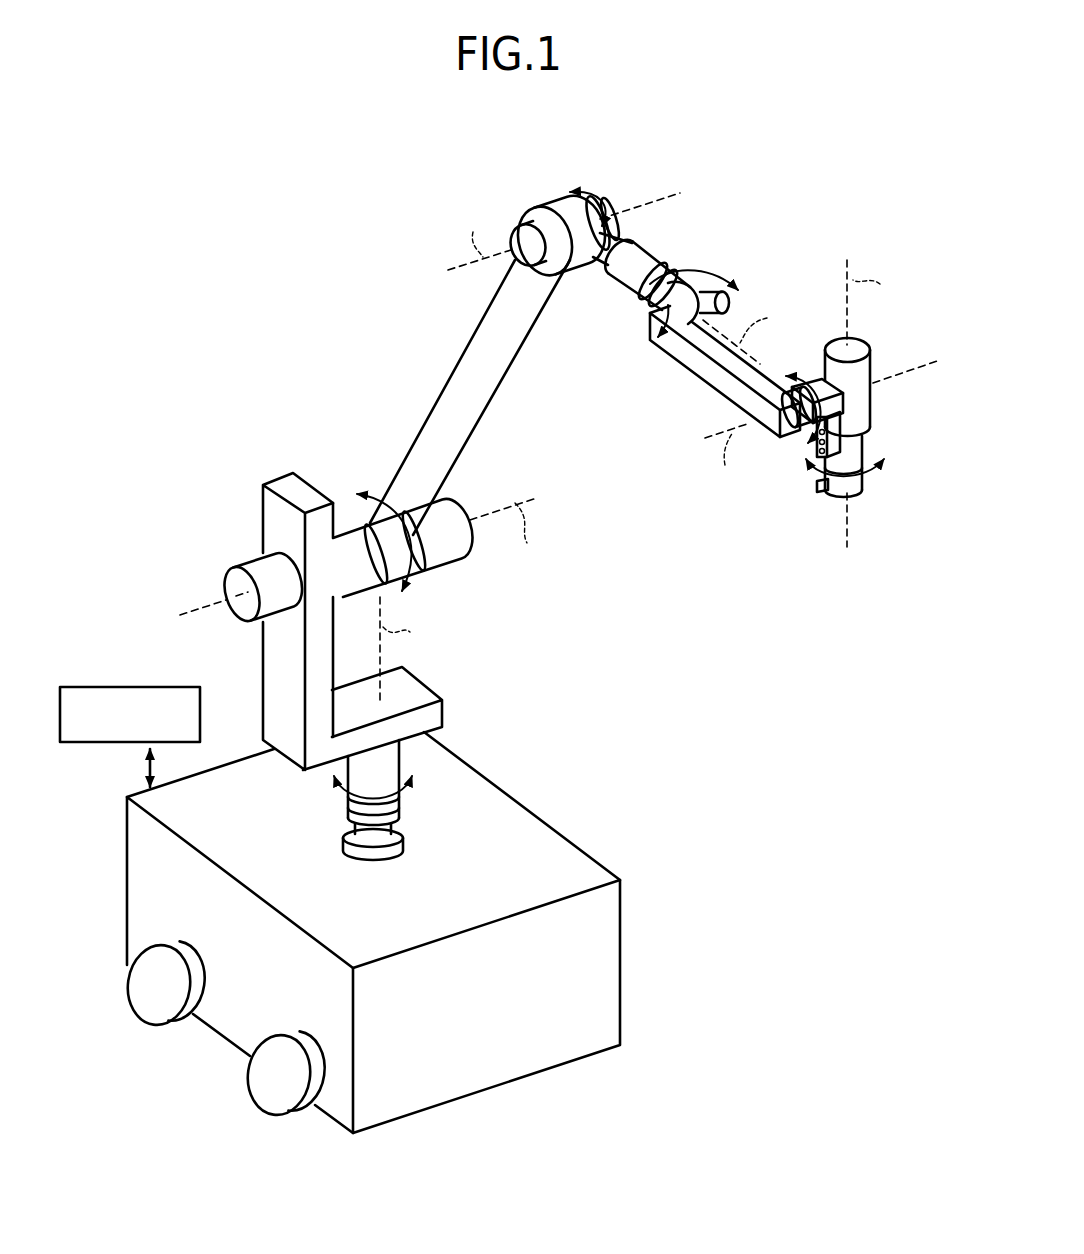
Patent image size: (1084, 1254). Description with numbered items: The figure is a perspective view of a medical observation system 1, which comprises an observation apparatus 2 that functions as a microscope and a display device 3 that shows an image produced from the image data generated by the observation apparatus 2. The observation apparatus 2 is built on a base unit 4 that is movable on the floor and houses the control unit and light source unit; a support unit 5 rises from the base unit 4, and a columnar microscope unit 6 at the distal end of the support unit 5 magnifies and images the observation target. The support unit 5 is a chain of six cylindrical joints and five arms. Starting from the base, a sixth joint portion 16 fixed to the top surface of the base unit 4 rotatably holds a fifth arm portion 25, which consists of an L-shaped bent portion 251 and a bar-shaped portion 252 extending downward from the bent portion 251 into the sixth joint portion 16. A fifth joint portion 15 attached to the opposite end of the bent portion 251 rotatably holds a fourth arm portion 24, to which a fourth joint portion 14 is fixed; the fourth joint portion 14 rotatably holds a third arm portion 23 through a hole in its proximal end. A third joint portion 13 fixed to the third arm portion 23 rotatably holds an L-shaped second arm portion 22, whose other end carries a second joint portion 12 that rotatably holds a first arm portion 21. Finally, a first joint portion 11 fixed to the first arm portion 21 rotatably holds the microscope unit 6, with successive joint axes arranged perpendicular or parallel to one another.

The medical observation system 1 is at (166, 250).
The medical observation apparatus 2 is at (706, 679).
The display device 3 is at (152, 687).
The base unit 4 is at (602, 943).
The support unit 5 is at (420, 428).
The microscope unit 6 is at (870, 424).
The first joint portion 11 is at (840, 347).
The second joint portion 12 is at (797, 408).
The third joint portion 13 is at (640, 300).
The fourth joint portion 14 is at (567, 207).
The fifth joint portion 15 is at (263, 572).
The sixth joint portion 16 is at (388, 817).
The first arm portion 21 is at (813, 388).
The second arm portion 22 is at (710, 378).
The third arm portion 23 is at (635, 277).
The fourth arm portion 24 is at (483, 345).
The fifth arm portion 25 is at (270, 640).
The bent portion 251 is at (423, 677).
The bar-shaped portion 252 is at (400, 758).